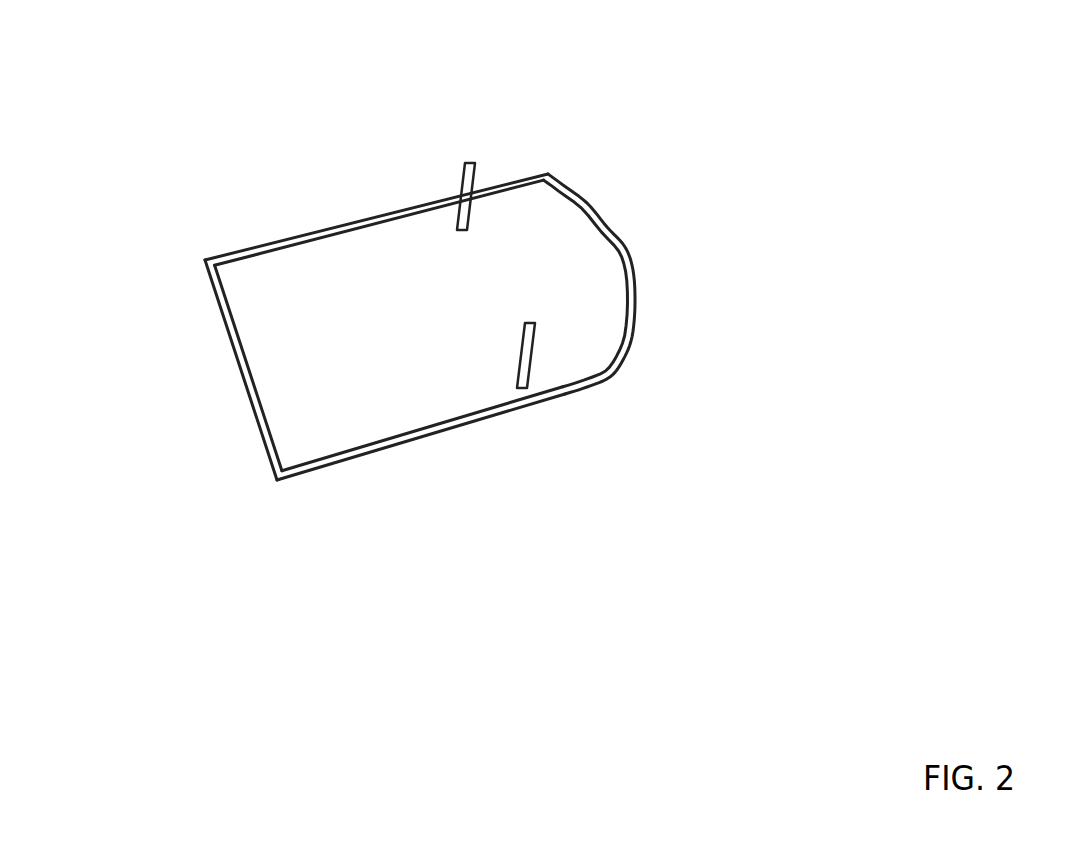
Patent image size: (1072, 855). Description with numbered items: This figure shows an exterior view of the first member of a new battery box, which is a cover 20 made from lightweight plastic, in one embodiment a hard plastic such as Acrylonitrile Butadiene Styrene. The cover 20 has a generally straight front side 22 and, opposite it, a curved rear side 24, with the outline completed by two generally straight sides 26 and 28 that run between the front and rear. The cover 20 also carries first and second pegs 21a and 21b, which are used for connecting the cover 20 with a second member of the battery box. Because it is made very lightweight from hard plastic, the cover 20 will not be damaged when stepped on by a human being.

The cover 20 is at (511, 348).
The first peg 21a is at (467, 225).
The second peg 21b is at (520, 360).
The front side 22 is at (282, 417).
The curved rear side 24 is at (632, 267).
The side 26 is at (357, 267).
The side 28 is at (413, 415).